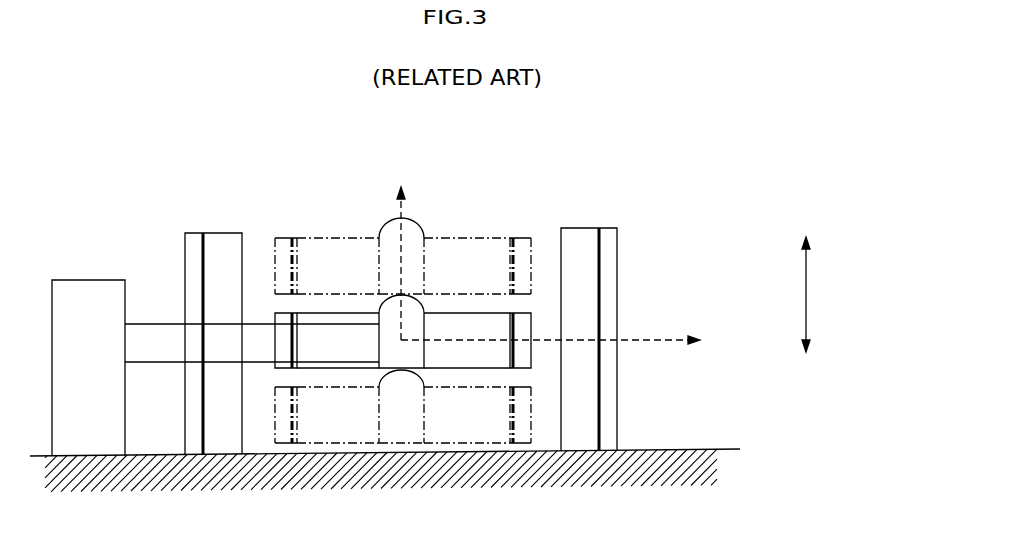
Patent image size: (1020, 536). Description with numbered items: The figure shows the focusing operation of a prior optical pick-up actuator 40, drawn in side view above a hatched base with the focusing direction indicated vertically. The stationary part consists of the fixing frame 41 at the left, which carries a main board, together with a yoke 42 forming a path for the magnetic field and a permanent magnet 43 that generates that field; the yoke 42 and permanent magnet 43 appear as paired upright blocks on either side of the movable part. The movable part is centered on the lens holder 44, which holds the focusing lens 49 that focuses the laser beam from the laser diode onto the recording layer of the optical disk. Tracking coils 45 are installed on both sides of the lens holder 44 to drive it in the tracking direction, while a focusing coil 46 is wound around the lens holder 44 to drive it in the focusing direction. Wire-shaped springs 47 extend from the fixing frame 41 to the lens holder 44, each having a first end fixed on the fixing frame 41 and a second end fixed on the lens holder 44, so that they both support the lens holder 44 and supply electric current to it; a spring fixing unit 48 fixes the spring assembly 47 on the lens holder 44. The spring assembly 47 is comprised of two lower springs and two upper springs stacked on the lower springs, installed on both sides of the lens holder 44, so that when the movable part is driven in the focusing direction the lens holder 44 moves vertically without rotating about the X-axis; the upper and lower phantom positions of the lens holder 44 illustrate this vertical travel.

The optical pickup actuator 40 is at (596, 176).
The fixing frame 41 is at (67, 290).
The yoke 42 is at (193, 240).
The permanent magnet 43 is at (220, 238).
The lens holder 44 is at (459, 322).
The tracking coils 45 is at (283, 315).
The focusing coil 46 is at (318, 313).
The wire-shaped springs 47 is at (157, 365).
The spring fixing unit 48 is at (415, 352).
The focusing lens 49 is at (421, 297).